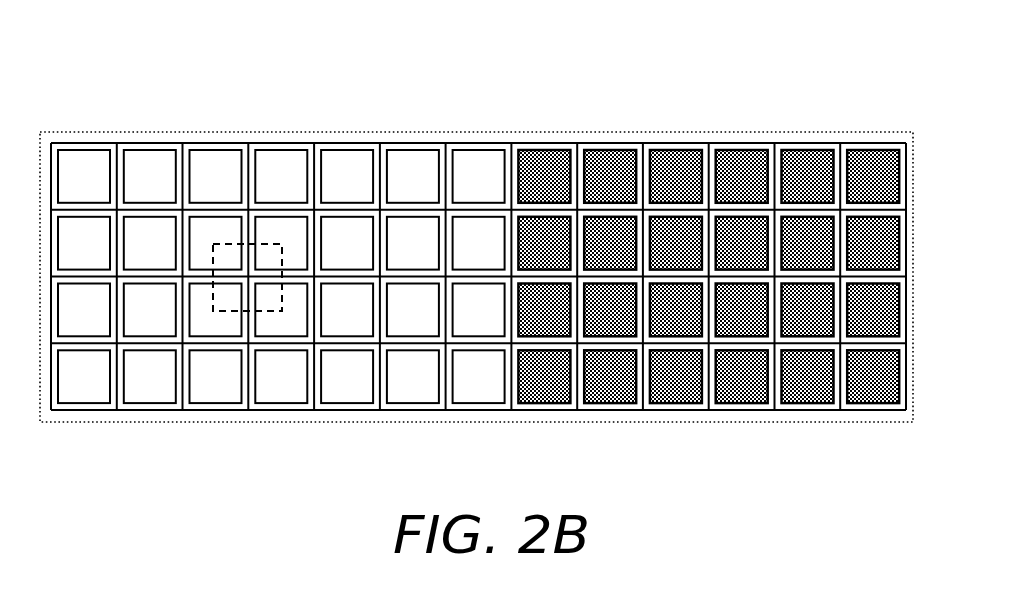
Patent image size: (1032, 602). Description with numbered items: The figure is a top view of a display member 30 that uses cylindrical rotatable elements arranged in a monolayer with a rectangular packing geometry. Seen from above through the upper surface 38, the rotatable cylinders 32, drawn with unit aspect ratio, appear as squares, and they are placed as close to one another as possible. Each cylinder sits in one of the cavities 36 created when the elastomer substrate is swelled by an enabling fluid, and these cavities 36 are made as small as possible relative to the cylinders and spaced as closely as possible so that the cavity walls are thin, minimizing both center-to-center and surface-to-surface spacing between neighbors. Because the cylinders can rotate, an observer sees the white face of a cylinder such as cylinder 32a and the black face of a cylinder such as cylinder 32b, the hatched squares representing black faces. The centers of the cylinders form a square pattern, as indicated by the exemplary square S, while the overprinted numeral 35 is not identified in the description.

The display member 30 is at (126, 74).
The rotatable cylinders 32 is at (478, 245).
The cylinder 32a is at (412, 160).
The cylinder 32b is at (672, 160).
The region 35 is at (708, 245).
The cavities 36 is at (147, 215).
The upper surface 38 is at (708, 245).
The exemplary square S is at (266, 243).